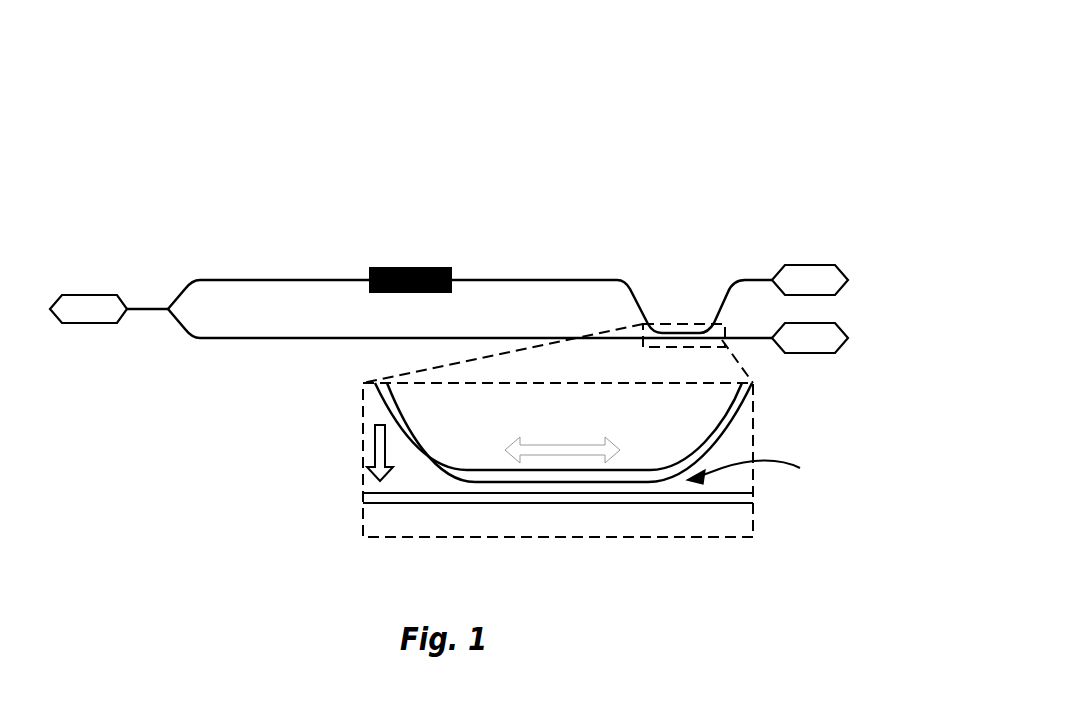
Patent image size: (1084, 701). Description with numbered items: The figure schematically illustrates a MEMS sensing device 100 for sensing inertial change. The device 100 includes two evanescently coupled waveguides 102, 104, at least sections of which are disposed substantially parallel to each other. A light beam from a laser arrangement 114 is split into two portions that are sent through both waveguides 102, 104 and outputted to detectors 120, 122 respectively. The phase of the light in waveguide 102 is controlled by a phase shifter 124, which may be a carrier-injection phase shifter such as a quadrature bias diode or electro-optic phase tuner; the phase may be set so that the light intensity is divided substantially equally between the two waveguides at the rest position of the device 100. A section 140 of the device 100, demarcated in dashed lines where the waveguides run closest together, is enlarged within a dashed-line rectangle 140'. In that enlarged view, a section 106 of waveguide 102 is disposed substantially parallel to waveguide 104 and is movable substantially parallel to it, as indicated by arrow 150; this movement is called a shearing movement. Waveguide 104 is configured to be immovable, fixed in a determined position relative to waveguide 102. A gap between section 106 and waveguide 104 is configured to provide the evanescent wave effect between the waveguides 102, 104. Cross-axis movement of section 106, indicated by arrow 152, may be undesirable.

The MEMS sensing device 100 is at (723, 70).
The waveguide 102 is at (568, 279).
The waveguide 104 is at (250, 343).
The section of waveguide 106 is at (695, 333).
The laser arrangement 114 is at (90, 295).
The detector 120 is at (810, 265).
The detector 122 is at (848, 338).
The phase shifter 124 is at (455, 267).
The section 140 is at (558, 338).
The dashed-line rectangle 140' is at (639, 481).
The arrow 150 is at (592, 458).
The arrow 152 is at (376, 470).